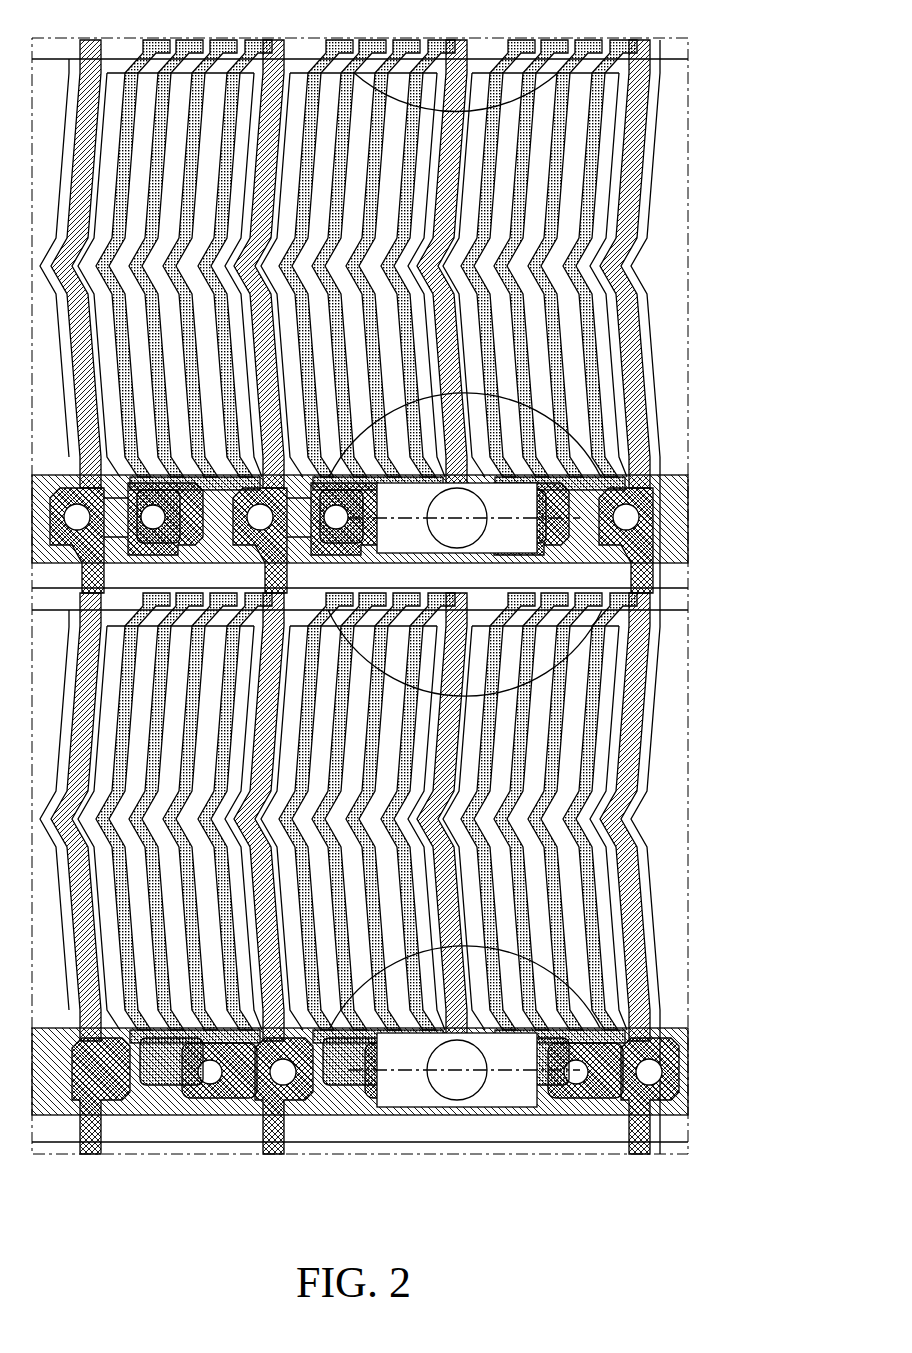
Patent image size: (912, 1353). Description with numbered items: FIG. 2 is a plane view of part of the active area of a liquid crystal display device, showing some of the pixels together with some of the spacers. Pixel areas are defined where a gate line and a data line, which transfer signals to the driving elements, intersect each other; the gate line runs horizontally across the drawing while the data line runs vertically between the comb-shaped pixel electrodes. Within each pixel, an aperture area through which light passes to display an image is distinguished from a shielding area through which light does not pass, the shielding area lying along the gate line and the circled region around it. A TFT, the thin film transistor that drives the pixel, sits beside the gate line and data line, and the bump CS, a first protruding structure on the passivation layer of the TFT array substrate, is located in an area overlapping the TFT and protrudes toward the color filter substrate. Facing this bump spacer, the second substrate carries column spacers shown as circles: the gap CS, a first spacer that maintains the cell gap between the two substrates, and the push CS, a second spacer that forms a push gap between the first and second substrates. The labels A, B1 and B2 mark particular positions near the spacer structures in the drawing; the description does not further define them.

The element aperture area is at (590, 178).
The element data line is at (628, 238).
The gap spacer gap CS is at (472, 513).
The bump spacer bump CS is at (518, 533).
The element gate line is at (673, 554).
The element shielding area is at (505, 576).
The thin film transistor TFT is at (607, 1056).
The push spacer push CS is at (437, 1078).
The region A is at (519, 519).
The region B1 is at (381, 1068).
The region B2 is at (564, 1068).